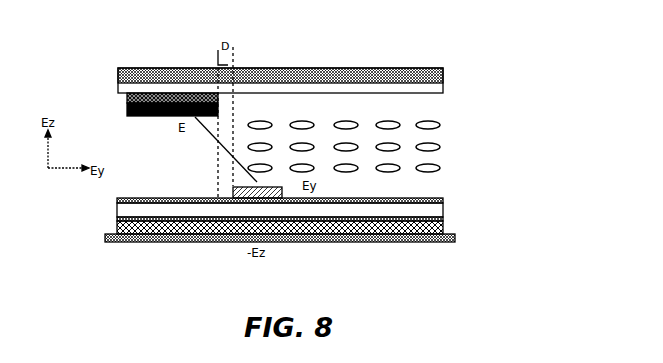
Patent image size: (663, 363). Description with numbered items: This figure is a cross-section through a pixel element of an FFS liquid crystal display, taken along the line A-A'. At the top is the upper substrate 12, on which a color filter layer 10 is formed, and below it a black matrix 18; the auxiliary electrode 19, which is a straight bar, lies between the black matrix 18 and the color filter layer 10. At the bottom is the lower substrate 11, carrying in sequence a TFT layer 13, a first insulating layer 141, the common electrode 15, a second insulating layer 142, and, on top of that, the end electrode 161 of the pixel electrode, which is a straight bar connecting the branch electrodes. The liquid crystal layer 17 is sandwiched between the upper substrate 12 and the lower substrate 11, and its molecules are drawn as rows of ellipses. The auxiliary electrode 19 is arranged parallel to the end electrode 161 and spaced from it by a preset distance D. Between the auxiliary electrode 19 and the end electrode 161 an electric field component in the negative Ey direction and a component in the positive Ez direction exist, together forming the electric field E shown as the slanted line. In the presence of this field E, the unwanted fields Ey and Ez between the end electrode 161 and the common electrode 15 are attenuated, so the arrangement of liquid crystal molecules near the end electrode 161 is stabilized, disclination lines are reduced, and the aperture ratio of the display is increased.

The color filter layer 10 is at (443, 88).
The lower substrate 11 is at (455, 235).
The upper substrate 12 is at (443, 72).
The TFT layer 13 is at (117, 225).
The common electrode 15 is at (117, 211).
The liquid crystal layer 17 is at (461, 177).
The black matrix 18 is at (127, 113).
The auxiliary electrode 19 is at (127, 96).
The first insulating layer 141 is at (443, 216).
The second insulating layer 142 is at (443, 199).
The end electrode 161 is at (233, 196).